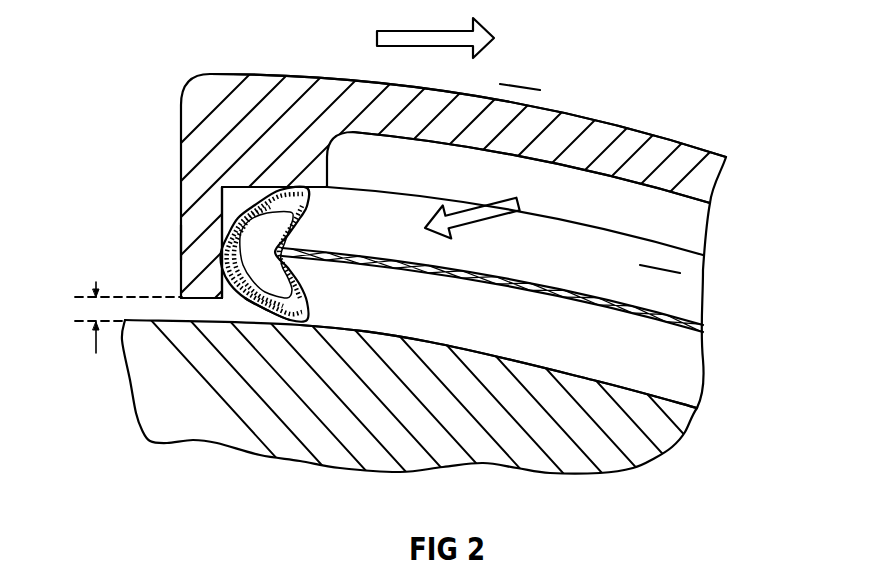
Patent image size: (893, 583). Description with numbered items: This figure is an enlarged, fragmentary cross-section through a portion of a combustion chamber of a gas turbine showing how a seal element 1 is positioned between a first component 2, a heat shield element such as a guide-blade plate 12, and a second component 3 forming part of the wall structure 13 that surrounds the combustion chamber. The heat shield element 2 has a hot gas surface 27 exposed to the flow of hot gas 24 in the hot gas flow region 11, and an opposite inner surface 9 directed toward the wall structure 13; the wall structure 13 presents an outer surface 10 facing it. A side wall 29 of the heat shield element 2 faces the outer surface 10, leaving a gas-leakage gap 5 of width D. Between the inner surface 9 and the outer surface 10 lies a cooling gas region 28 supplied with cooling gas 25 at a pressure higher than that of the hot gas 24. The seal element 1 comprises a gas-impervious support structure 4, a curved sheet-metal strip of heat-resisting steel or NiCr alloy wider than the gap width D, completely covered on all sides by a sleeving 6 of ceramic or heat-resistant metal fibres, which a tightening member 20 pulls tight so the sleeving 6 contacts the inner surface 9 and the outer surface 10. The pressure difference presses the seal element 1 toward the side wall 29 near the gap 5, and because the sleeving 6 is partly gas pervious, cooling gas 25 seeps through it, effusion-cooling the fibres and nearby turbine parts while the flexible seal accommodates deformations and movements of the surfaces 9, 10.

The seal element 1 is at (660, 272).
The first component 2 is at (661, 150).
The guide-blade plate 12 is at (661, 150).
The second component 3 is at (666, 442).
The wall structure 13 is at (666, 442).
The support structure 4 is at (223, 232).
The gas-leakage gap 5 is at (185, 313).
The sleeving 6 is at (258, 308).
The inner surface 9 is at (248, 187).
The outer surface 10 is at (458, 343).
The hot gas flow region 11 is at (517, 67).
The tightening member 20 is at (676, 320).
The hot gas 24 is at (377, 31).
The cooling gas 25 is at (518, 205).
The hot gas surface 27 is at (215, 74).
The cooling gas region 28 is at (666, 215).
The side wall 29 is at (182, 241).
The width of the gas-leakage gap D is at (97, 310).